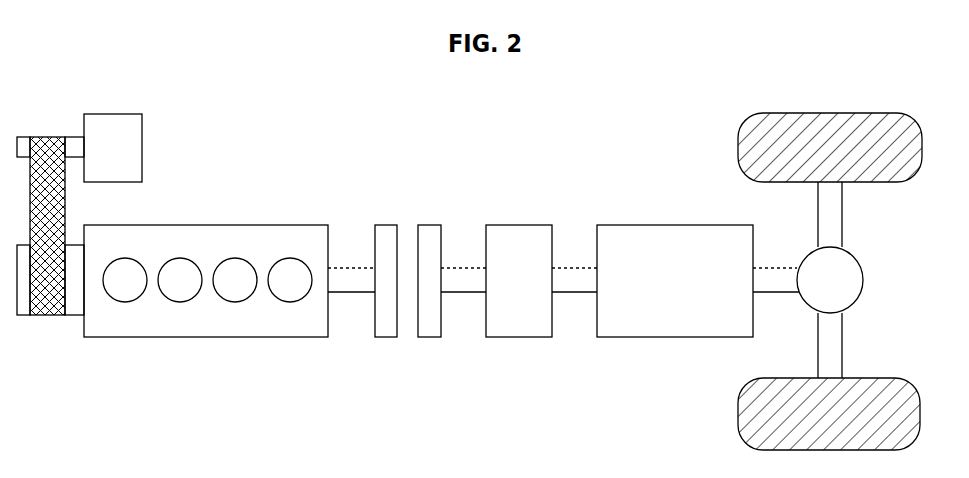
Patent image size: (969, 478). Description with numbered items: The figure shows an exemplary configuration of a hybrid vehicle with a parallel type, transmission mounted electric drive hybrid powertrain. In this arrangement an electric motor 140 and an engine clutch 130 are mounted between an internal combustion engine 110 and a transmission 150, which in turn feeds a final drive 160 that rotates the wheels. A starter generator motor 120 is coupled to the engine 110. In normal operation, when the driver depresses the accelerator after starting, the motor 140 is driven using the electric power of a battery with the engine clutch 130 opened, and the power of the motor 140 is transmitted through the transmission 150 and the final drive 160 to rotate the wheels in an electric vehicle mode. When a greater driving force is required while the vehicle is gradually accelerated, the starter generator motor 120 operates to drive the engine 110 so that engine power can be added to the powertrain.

The internal combustion engine 110 is at (305, 225).
The starter generator motor 120 is at (142, 135).
The engine clutch 130 is at (427, 225).
The electric motor 140 is at (515, 225).
The transmission 150 is at (683, 225).
The final drive 160 is at (853, 257).